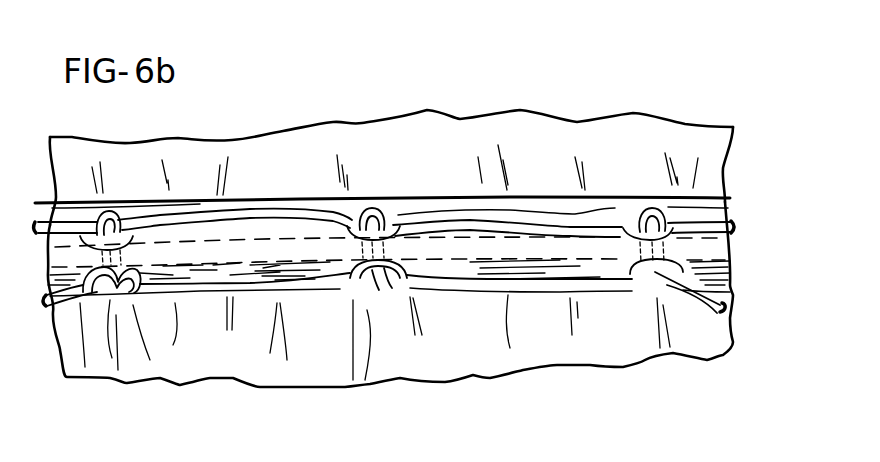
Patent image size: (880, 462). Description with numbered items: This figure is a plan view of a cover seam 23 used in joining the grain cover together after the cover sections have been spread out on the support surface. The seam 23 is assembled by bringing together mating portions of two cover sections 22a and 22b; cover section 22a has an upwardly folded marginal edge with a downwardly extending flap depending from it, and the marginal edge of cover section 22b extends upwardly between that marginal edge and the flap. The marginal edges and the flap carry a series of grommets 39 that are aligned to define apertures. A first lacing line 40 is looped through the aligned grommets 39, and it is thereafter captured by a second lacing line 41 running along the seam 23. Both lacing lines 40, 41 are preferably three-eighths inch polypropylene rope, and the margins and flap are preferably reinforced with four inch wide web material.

The cover section 22a is at (297, 362).
The cover section 22b is at (302, 143).
The seam 23 is at (517, 203).
The grommets 39 is at (630, 275).
The first lacing line 40 is at (543, 285).
The second lacing line 41 is at (440, 216).